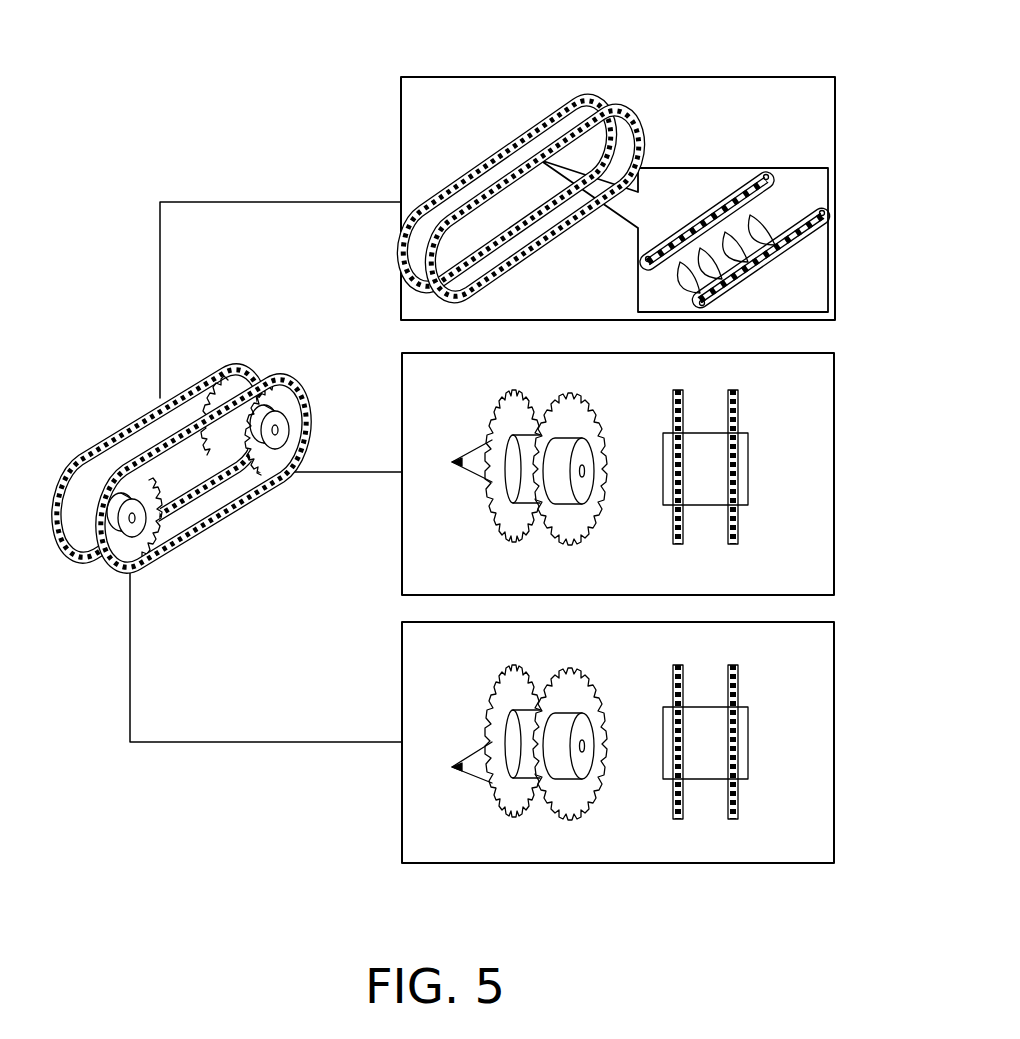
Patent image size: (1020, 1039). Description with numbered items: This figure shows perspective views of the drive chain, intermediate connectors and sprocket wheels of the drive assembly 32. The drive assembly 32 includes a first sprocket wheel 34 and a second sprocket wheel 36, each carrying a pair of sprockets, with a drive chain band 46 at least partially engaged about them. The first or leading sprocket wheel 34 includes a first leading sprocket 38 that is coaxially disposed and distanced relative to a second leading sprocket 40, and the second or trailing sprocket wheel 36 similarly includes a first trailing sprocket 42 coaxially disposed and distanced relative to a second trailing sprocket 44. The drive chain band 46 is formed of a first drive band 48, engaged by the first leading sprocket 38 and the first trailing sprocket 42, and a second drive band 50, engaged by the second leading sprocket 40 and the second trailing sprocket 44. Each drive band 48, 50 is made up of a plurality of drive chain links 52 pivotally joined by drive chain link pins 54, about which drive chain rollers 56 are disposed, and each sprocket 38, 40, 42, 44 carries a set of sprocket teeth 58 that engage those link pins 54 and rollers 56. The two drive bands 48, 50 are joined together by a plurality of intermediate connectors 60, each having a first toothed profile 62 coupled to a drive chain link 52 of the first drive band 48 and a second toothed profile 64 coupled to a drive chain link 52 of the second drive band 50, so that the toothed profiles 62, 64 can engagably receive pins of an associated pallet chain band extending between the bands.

The drive assembly 32 is at (97, 393).
The first sprocket wheel 34 is at (786, 741).
The second sprocket wheel 36 is at (786, 463).
The first leading sprocket 38 is at (513, 800).
The second leading sprocket 40 is at (123, 548).
The first trailing sprocket 42 is at (213, 443).
The second trailing sprocket 44 is at (293, 422).
The drive chain band 46 is at (685, 109).
The first drive band 48 is at (243, 360).
The second drive band 50 is at (290, 377).
The drive chain link 52 is at (800, 250).
The drive chain link pin 54 is at (822, 222).
The drive chain roller 56 is at (695, 217).
The sprocket teeth 58 is at (454, 611).
The intermediate connector 60 is at (692, 277).
The first toothed profile 62 is at (775, 188).
The second toothed profile 64 is at (787, 222).